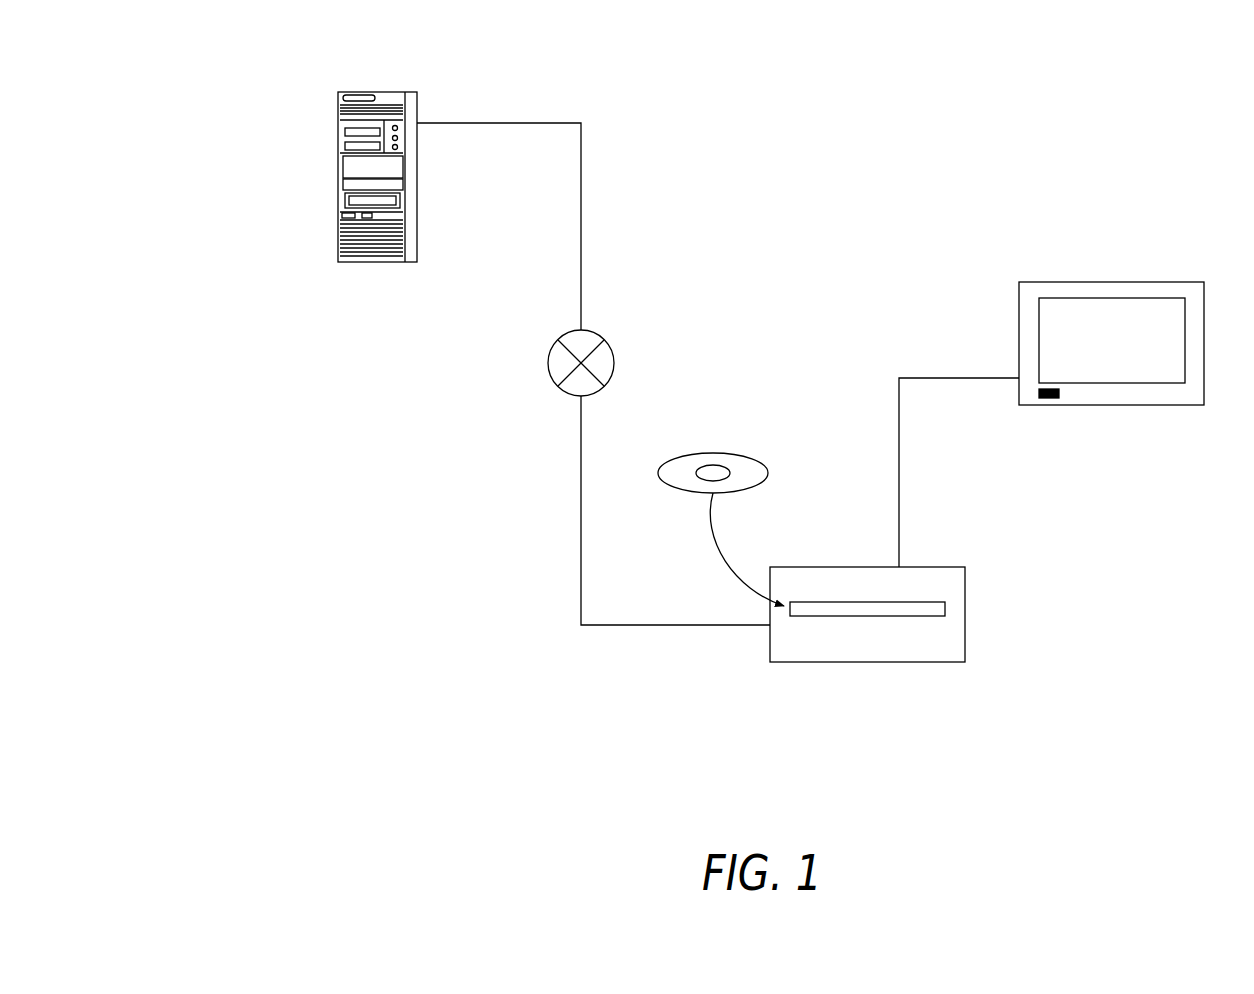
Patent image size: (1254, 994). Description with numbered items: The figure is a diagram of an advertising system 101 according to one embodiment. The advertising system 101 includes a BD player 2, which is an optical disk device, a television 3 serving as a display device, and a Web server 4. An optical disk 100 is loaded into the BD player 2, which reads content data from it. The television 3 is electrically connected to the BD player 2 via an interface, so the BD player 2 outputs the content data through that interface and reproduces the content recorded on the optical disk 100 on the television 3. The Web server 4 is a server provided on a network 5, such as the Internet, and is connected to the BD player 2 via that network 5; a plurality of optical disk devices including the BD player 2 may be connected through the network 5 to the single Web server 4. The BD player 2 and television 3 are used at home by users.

The advertising system 101 is at (458, 480).
The Web server 4 is at (338, 124).
The network 5 is at (604, 340).
The optical disk 100 is at (776, 446).
The BD player 2 is at (857, 663).
The television 3 is at (1019, 302).